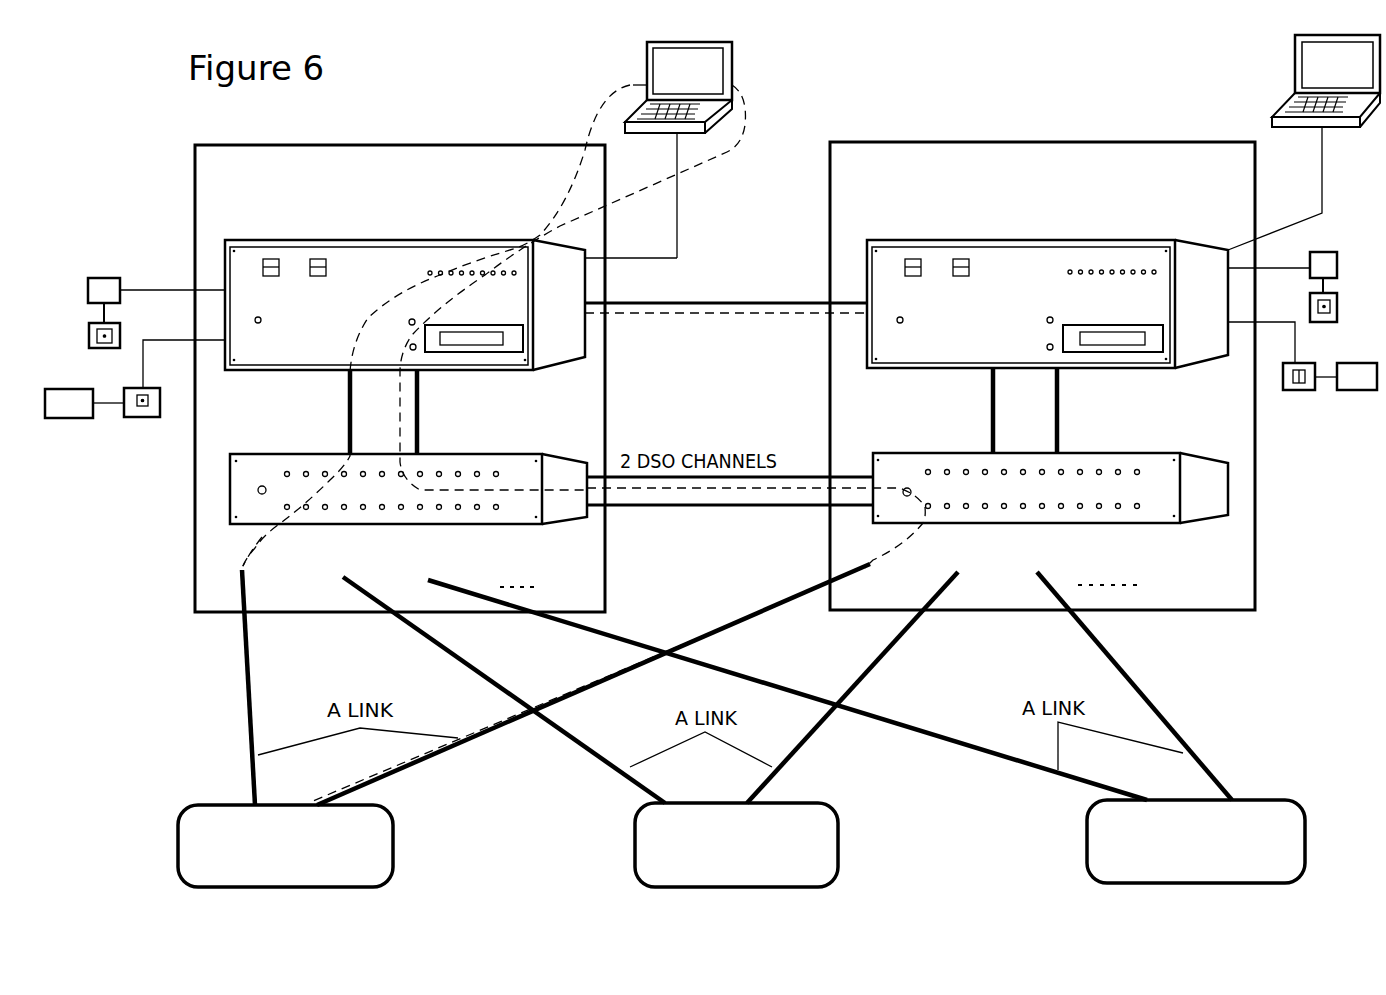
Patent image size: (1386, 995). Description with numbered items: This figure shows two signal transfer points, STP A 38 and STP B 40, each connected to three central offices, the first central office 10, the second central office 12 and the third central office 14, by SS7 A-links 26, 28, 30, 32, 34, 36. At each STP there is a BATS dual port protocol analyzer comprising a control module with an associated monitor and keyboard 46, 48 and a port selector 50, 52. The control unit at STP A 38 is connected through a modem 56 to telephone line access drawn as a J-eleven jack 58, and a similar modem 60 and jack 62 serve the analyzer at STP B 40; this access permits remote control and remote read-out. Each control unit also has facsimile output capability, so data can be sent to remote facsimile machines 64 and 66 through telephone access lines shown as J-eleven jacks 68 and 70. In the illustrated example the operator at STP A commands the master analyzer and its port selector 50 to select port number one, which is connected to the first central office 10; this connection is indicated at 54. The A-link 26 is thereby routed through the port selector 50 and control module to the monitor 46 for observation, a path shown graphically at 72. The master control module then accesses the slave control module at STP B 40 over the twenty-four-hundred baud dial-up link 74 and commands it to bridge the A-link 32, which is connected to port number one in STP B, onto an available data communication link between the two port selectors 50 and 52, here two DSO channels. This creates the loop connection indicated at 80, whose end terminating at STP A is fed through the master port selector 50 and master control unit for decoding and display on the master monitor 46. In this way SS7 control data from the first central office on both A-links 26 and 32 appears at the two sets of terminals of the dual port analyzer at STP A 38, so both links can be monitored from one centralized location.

The central office 10 is at (187, 829).
The central office 12 is at (645, 833).
The central office 14 is at (1097, 833).
The SS7 A-link 26 is at (245, 680).
The SS7 link 28 is at (433, 643).
The SS7 link 30 is at (597, 636).
The A-link 32 is at (775, 610).
The SS7 link 34 is at (882, 657).
The SS7 link 36 is at (1123, 666).
The STP 38 is at (352, 145).
The STP 40 is at (998, 143).
The monitor and keyboard 46 is at (732, 60).
The monitor and keyboard 48 is at (1295, 57).
The port selector 50 is at (557, 462).
The port selector 52 is at (1195, 462).
The connection 54 is at (256, 541).
The modem 56 is at (102, 285).
The J11 jack 58 is at (90, 328).
The modem 60 is at (1337, 262).
The J11 jack 62 is at (1334, 306).
The facsimile machine 64 is at (77, 413).
The facsimile machine 66 is at (1360, 390).
The J11 jack 68 is at (150, 417).
The J11 jack 70 is at (1305, 390).
The path 72 is at (605, 108).
The 2400 BAUD dial-up link 74 is at (709, 316).
The loop connection 80 is at (728, 152).